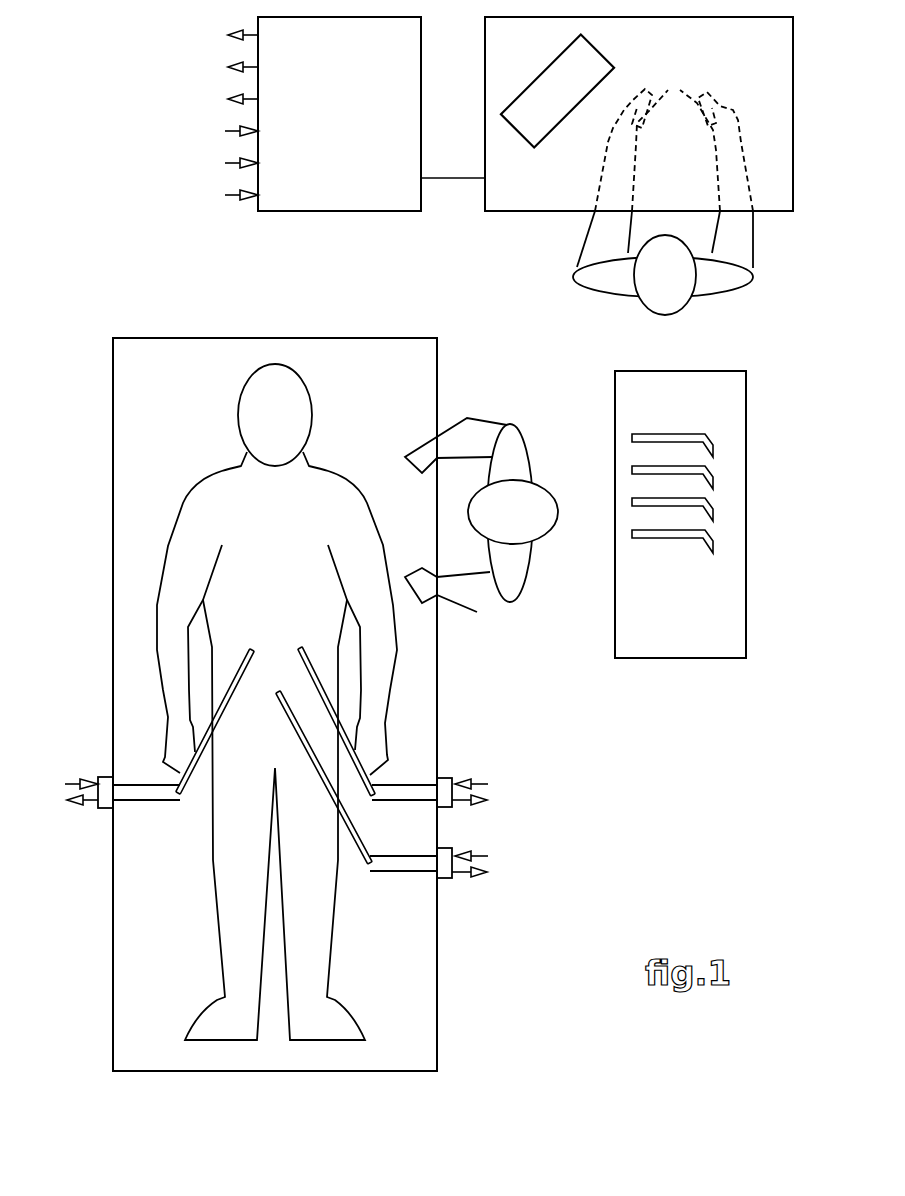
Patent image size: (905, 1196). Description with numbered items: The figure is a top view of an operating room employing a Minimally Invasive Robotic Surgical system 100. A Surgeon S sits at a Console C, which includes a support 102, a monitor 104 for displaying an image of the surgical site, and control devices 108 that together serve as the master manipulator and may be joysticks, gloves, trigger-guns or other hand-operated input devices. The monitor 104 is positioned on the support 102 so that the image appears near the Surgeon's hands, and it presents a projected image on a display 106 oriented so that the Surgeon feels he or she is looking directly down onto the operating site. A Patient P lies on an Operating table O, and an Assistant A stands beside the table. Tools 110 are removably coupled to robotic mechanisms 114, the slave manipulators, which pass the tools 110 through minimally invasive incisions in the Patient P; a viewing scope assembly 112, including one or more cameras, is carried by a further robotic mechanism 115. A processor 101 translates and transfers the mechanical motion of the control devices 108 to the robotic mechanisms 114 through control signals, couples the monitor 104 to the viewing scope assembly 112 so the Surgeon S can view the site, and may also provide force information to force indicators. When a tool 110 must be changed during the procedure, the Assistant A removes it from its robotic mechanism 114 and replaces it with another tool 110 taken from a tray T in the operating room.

The Minimally Invasive Robotic Surgical system 100 is at (638, 772).
The processor 101 is at (407, 45).
The support 102 is at (534, 60).
The monitor 104 is at (557, 103).
The display 106 is at (574, 100).
The control devices 108 is at (674, 137).
The tool 110 is at (235, 677).
The viewing scope assembly 112 is at (280, 707).
The robotic mechanism 114 is at (127, 800).
The robotic mechanism 115 is at (383, 852).
The Console C is at (639, 105).
The Surgeon S is at (715, 295).
The Operating table O is at (193, 337).
The Patient P is at (207, 490).
The Assistant A is at (515, 435).
The tray T is at (615, 608).